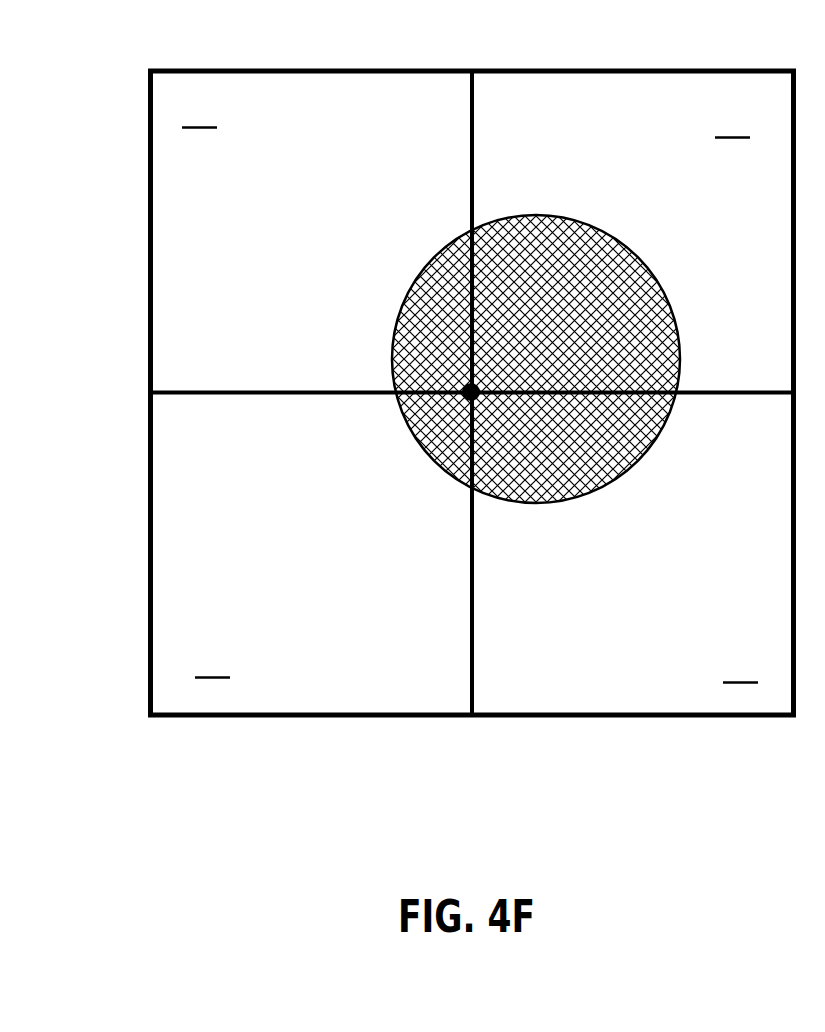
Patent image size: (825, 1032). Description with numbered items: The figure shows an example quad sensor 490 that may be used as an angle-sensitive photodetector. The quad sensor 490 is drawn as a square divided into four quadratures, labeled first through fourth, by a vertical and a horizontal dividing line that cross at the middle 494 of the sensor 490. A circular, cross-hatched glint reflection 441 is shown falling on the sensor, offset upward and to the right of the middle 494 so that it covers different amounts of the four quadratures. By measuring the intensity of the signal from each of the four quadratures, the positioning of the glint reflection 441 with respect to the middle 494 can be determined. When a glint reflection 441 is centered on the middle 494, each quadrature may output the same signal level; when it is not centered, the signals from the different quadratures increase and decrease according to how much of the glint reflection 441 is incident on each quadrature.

The quad sensor 490 is at (150, 70).
The glint reflection 441 is at (425, 268).
The middle of the sensor 494 is at (471, 392).